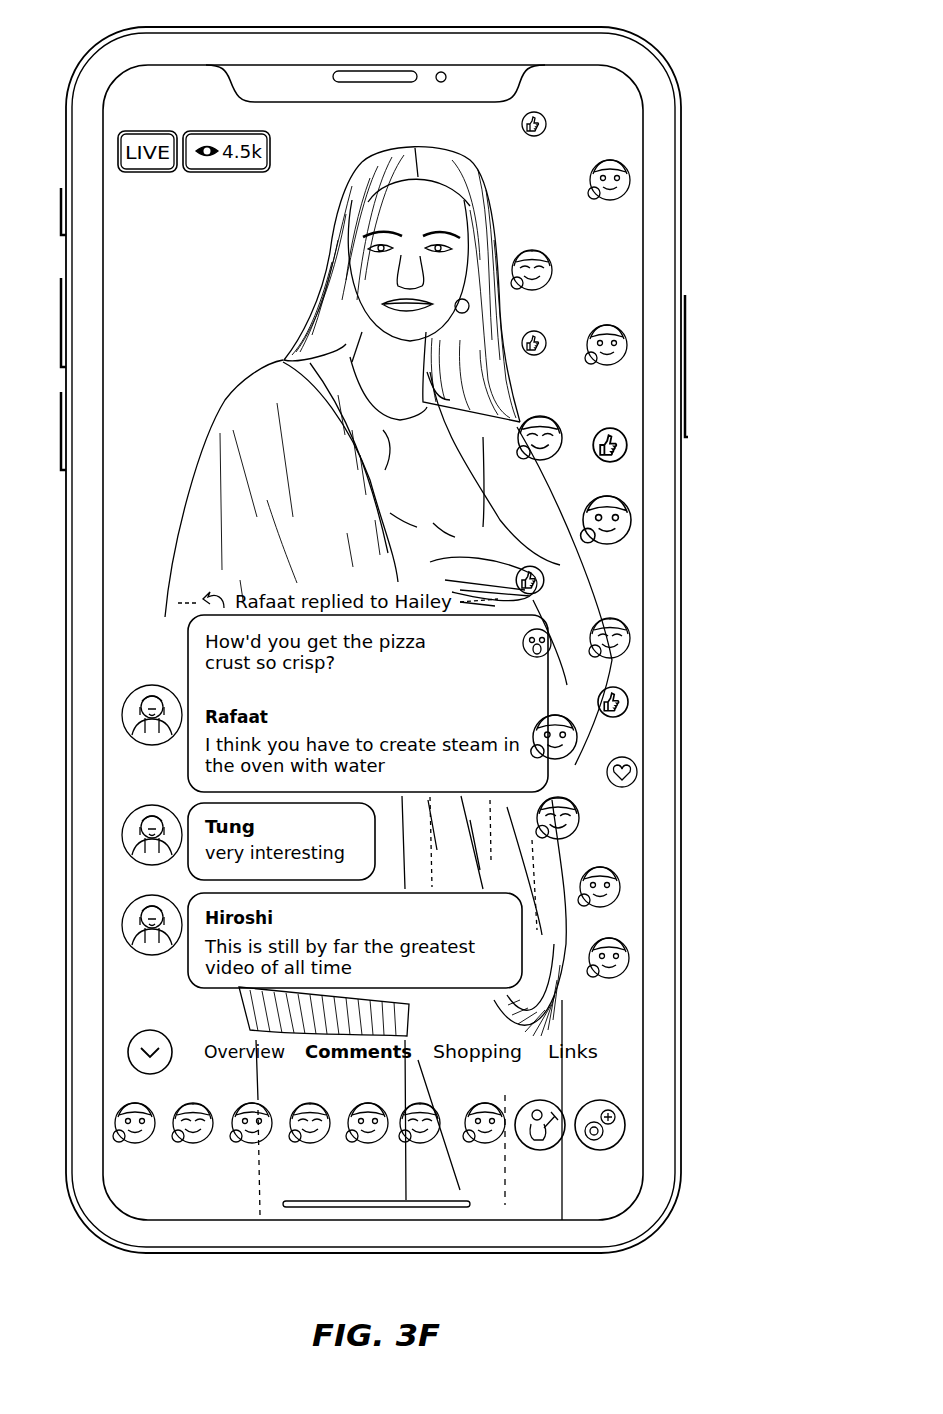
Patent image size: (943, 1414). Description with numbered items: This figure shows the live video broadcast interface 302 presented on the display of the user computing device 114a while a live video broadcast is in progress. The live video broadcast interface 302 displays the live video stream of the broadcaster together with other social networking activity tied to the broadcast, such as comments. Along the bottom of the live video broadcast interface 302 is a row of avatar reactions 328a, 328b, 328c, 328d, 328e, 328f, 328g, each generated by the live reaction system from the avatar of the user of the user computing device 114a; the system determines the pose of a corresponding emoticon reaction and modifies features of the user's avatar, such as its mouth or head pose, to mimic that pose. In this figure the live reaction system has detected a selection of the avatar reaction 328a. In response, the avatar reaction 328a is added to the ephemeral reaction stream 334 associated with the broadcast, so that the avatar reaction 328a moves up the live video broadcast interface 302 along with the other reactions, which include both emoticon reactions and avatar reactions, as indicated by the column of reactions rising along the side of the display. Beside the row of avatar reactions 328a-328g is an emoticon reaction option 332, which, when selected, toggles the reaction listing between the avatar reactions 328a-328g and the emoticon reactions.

The user computing device 114a is at (658, 58).
The live video broadcast interface 302 is at (548, 75).
The ephemeral reaction stream 334 is at (740, 108).
The avatar reaction 328a is at (627, 965).
The avatar reaction 328b is at (198, 1148).
The avatar reaction 328c is at (258, 1148).
The avatar reaction 328d is at (318, 1148).
The avatar reaction 328e is at (370, 1148).
The avatar reaction 328f is at (435, 1148).
The avatar reaction 328g is at (487, 1150).
The emoticon reaction option 332 is at (622, 1130).